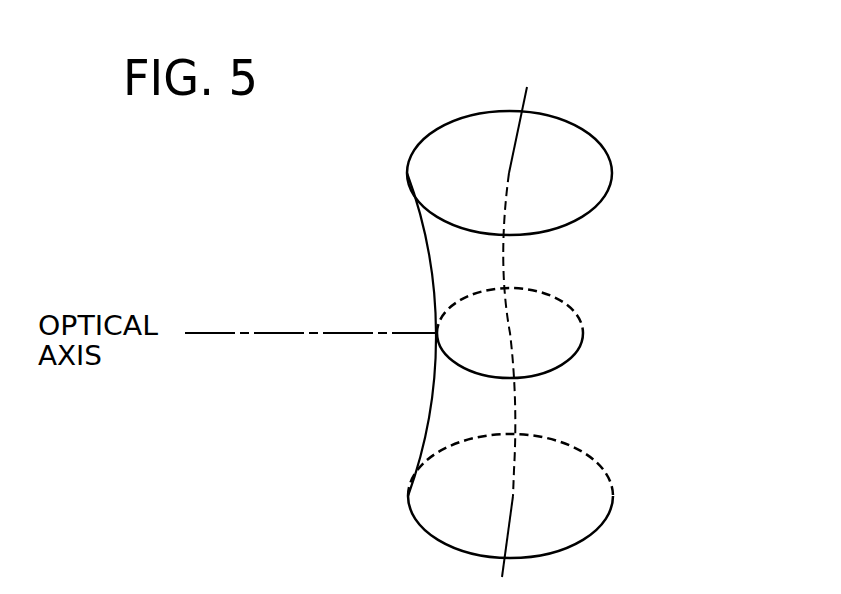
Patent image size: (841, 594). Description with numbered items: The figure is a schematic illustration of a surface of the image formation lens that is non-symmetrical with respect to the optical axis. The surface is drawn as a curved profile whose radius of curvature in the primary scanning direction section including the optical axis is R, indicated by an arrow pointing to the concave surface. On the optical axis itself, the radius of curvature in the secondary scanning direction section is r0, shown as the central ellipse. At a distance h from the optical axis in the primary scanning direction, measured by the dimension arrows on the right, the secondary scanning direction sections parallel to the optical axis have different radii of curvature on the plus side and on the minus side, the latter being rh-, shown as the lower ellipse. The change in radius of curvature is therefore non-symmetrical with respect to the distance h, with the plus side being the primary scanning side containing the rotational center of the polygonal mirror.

The radius of curvature in the primary scanning direction section R is at (412, 272).
The radius of curvature in the secondary scanning direction section r0 is at (437, 333).
The radius of curvature rh(−) rh- is at (408, 496).
The distance from the optical axis h is at (704, 173).